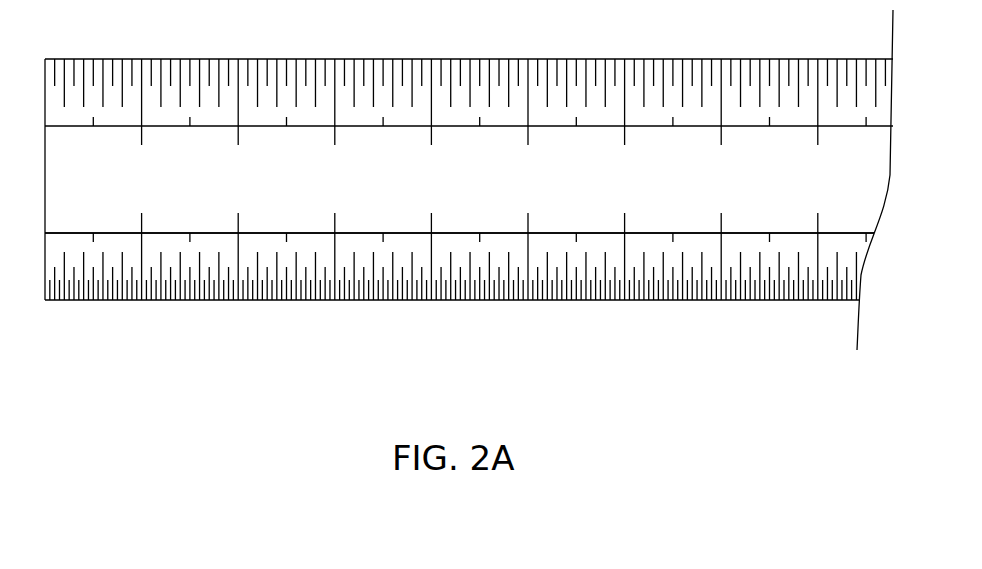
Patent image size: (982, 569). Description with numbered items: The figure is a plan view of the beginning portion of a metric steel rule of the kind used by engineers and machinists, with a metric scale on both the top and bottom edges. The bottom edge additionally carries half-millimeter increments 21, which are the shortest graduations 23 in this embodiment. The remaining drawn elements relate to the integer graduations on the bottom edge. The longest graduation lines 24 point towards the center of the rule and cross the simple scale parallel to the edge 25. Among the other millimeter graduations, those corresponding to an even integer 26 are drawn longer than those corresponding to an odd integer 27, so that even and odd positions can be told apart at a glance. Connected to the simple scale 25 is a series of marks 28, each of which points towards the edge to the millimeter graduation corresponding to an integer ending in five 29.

The half-millimeter increments 21 is at (46, 205).
The shortest graduations 23 is at (47, 290).
The longest graduation lines 24 is at (143, 223).
The simple scale parallel to the edge 25 is at (270, 233).
The millimeter graduations corresponding to an even integer 26 is at (353, 258).
The millimeter graduations corresponding to an odd integer 27 is at (442, 270).
The marks 28 is at (577, 235).
The millimeter graduation corresponding to an integer ending in five 29 is at (577, 271).